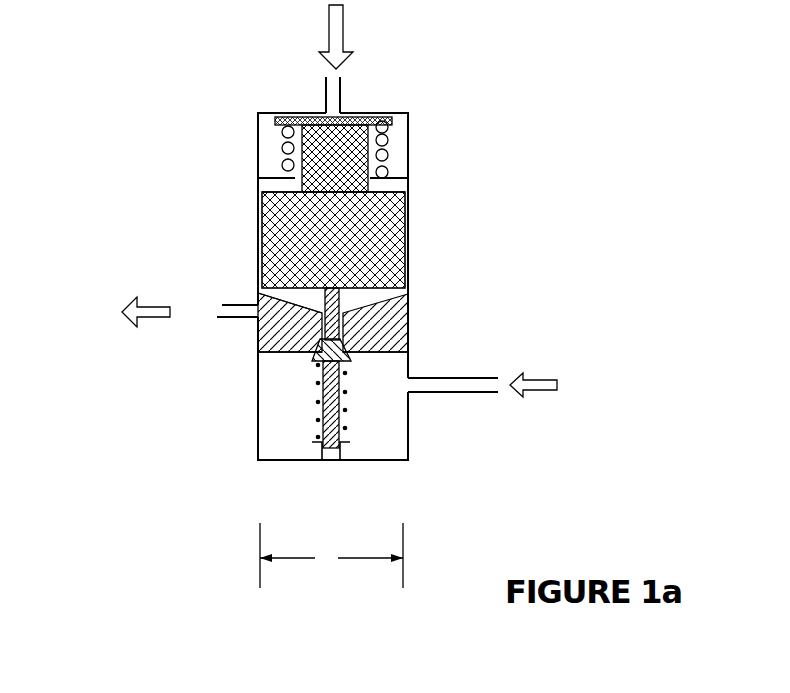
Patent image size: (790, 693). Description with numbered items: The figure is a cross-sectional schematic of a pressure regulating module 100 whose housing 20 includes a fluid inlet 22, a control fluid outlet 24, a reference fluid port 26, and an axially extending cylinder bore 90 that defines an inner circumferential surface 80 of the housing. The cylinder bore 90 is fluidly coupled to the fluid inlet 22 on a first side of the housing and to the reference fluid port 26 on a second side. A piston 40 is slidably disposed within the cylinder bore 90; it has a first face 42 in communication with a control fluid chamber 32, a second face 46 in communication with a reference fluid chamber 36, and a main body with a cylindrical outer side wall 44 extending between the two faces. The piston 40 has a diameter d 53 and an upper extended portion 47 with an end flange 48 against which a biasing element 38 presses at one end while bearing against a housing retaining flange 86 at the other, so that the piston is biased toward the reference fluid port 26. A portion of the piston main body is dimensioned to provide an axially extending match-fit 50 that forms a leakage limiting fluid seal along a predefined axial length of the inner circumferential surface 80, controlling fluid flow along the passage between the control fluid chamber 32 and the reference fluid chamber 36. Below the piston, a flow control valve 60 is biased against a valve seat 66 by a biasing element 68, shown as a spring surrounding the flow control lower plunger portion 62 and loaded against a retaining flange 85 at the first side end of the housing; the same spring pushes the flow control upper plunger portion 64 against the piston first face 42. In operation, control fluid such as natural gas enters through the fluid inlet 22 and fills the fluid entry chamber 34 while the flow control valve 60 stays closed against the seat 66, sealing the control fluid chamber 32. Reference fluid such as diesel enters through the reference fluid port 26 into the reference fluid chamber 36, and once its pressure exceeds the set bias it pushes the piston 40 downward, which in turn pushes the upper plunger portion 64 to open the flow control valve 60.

The pressure regulating module 100 is at (128, 143).
The housing 20 is at (247, 394).
The fluid inlet 22 is at (467, 393).
The control fluid outlet 24 is at (222, 305).
The reference fluid port 26 is at (342, 93).
The control fluid chamber 32 is at (263, 300).
The fluid entry chamber 34 is at (388, 413).
The reference fluid chamber 36 is at (397, 135).
The biasing element 38 is at (390, 155).
The piston 40 is at (383, 238).
The first face 42 is at (376, 298).
The cylindrical outer side wall 44 is at (407, 270).
The second face 46 is at (407, 193).
The upper extended portion 47 is at (317, 163).
The end flange 48 is at (383, 120).
The match-fit 50 is at (245, 215).
The diameter d 53 is at (355, 558).
The flow control valve 60 is at (320, 357).
The flow control lower plunger portion 62 is at (331, 448).
The flow control upper plunger portion 64 is at (332, 323).
The valve seat 66 is at (350, 347).
The biasing element 68 is at (346, 409).
The inner circumferential surface 80 is at (407, 447).
The retaining flange 85 is at (351, 445).
The housing retaining flange 86 is at (285, 178).
The axially extending cylinder bore 90 is at (262, 442).